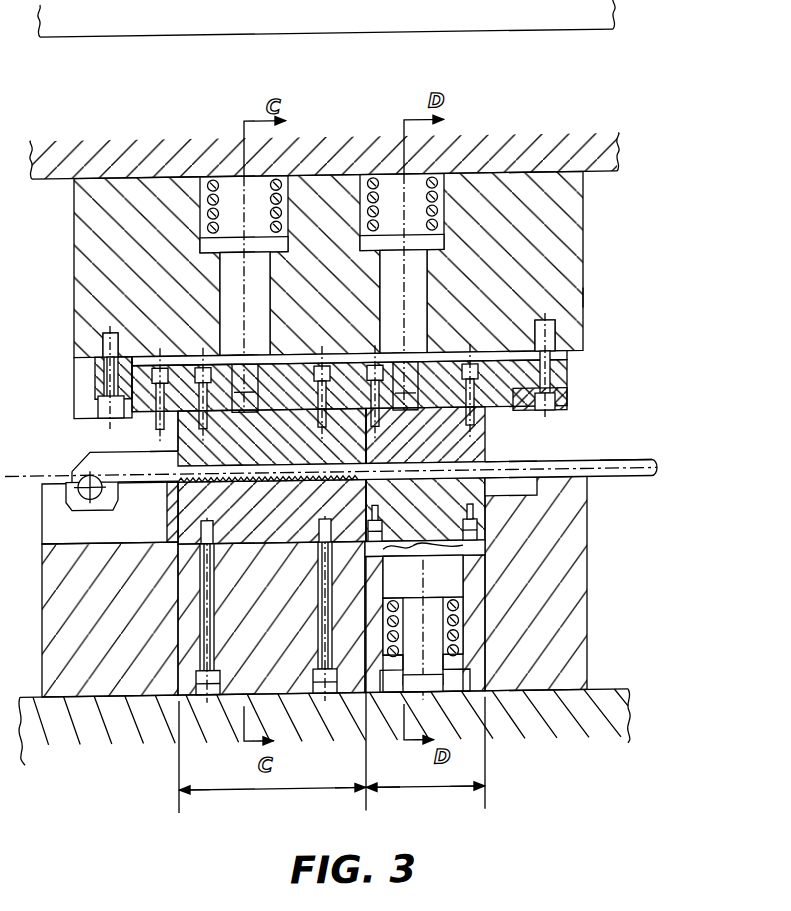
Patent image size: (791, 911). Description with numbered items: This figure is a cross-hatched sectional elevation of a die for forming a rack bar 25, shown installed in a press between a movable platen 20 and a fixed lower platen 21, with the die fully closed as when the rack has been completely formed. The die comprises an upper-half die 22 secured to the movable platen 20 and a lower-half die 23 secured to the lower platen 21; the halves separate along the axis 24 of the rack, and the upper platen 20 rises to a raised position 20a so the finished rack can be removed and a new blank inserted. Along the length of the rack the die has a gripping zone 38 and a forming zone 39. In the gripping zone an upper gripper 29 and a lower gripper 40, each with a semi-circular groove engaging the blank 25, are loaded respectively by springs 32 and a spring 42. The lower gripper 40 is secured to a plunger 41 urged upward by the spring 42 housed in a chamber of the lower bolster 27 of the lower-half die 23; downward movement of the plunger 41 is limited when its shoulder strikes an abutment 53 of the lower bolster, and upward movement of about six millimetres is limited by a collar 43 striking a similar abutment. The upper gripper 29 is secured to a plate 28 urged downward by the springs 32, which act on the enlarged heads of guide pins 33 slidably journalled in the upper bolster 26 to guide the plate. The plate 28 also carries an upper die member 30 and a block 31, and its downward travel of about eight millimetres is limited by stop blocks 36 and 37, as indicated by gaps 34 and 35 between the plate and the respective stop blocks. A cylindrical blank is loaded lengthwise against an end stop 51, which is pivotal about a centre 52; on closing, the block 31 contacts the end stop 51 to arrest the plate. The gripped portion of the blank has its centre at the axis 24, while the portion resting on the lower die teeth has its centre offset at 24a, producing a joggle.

The movable platen 20 is at (601, 176).
The raised position 20a is at (530, 33).
The fixed lower platen 21 is at (603, 689).
The upper-half die 22 is at (584, 301).
The lower-half die 23 is at (588, 564).
The axis 24 is at (601, 463).
The centre 24a is at (513, 465).
The rack bar 25 is at (618, 480).
The upper bolster 26 is at (570, 246).
The lower bolster 27 is at (588, 590).
The plate 28 is at (562, 373).
The upper gripper 29 is at (486, 431).
The upper die member 30 is at (182, 421).
The block 31 is at (157, 441).
The springs 32 is at (292, 175).
The guide pins 33 is at (384, 302).
The gap 34 is at (98, 378).
The gap 35 is at (566, 397).
The stop block 36 is at (104, 342).
The stop block 37 is at (568, 358).
The gripping zone 38 is at (437, 792).
The forming zone 39 is at (267, 792).
The lower gripper 40 is at (382, 514).
The plunger 41 is at (450, 584).
The spring 42 is at (458, 638).
The collar 43 is at (462, 695).
The end stop 51 is at (83, 460).
The centre 52 is at (79, 506).
The abutment 53 is at (447, 558).